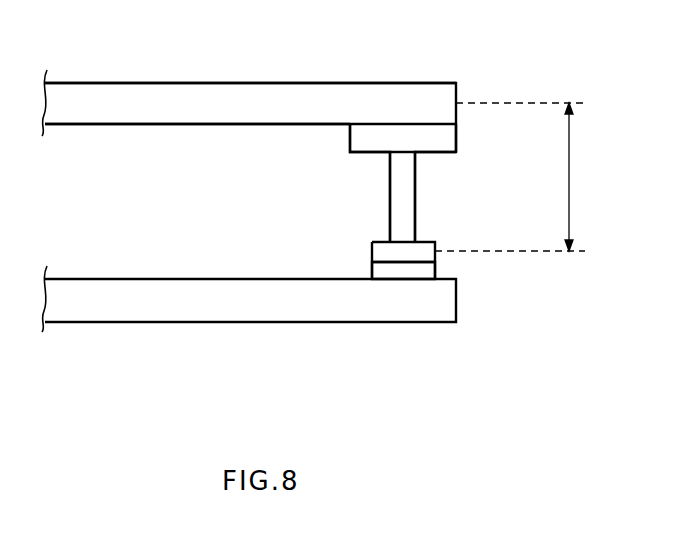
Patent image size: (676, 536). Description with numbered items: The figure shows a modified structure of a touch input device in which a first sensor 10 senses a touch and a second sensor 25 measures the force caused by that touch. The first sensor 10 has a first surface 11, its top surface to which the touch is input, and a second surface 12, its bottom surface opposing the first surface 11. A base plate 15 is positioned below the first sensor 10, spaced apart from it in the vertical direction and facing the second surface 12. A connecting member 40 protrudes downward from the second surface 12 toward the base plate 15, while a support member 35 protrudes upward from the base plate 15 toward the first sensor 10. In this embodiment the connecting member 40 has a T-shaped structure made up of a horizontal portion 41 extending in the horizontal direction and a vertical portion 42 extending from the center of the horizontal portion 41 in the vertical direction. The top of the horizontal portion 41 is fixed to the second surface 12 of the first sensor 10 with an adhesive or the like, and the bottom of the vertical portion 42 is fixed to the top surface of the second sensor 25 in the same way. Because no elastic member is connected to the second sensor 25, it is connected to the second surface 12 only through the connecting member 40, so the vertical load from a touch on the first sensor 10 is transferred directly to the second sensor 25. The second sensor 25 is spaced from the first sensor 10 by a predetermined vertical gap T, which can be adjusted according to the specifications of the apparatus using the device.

The first sensor 10 is at (250, 96).
The first surface 11 is at (104, 82).
The second surface 12 is at (100, 126).
The base plate 15 is at (247, 323).
The second sensor 25 is at (372, 248).
The support member 35 is at (426, 270).
The connecting member 40 is at (453, 170).
The horizontal portion 41 is at (447, 138).
The vertical portion 42 is at (408, 203).
The gap T is at (512, 177).